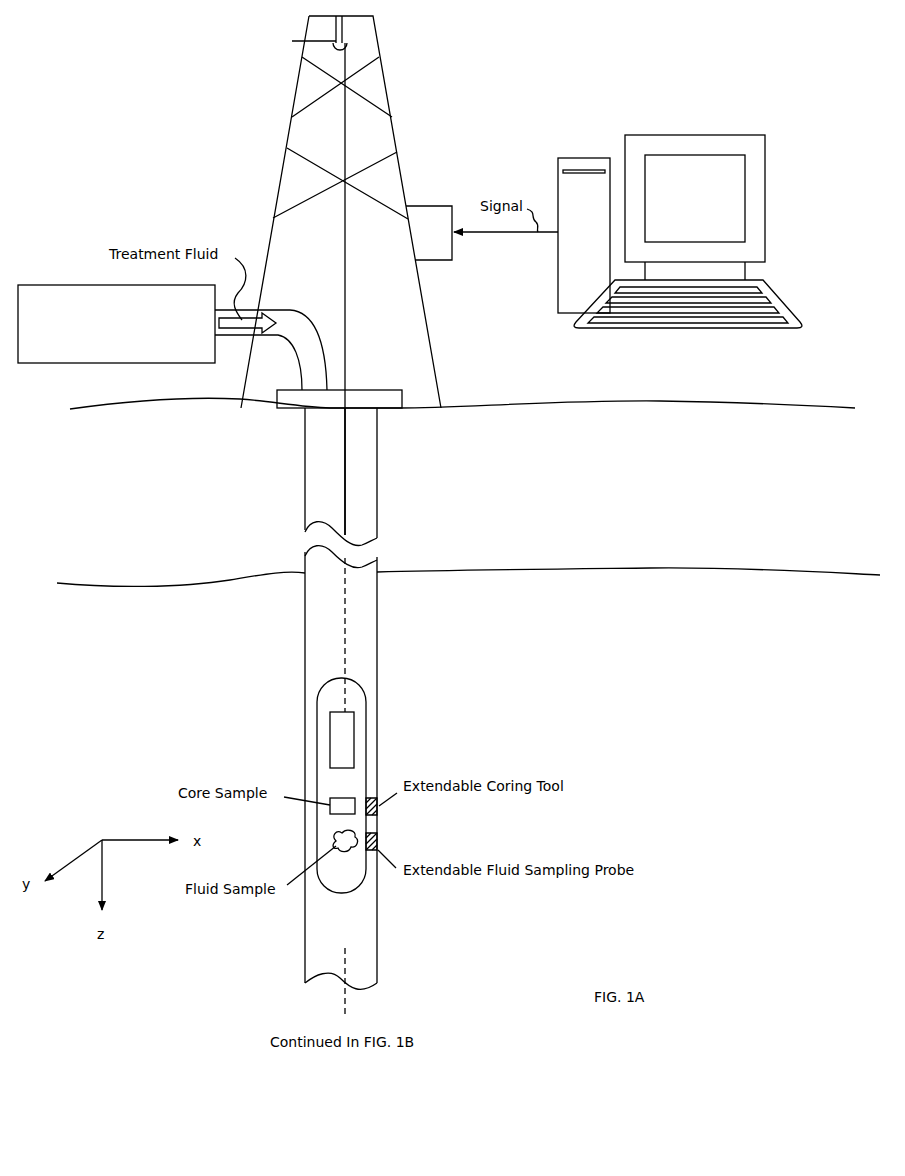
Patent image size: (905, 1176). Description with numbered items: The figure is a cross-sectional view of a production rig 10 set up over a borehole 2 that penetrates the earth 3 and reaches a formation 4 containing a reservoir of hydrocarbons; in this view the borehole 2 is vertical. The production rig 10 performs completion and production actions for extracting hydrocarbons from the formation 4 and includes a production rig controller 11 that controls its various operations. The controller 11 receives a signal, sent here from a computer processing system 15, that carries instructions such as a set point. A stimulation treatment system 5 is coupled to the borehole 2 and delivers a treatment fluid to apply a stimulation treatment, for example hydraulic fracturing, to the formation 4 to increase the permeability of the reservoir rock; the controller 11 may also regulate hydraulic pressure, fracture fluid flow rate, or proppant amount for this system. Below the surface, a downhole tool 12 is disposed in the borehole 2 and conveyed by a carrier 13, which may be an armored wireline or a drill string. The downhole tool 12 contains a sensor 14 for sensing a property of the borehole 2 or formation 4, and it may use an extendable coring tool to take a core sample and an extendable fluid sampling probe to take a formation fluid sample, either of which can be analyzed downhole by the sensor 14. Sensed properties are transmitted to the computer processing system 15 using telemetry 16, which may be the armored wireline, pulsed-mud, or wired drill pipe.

The production rig 10 is at (198, 112).
The production rig controller 11 is at (420, 206).
The computer processing system 15 is at (580, 158).
The stimulation treatment system 5 is at (116, 324).
The earth 3 is at (181, 446).
The borehole 2 is at (313, 500).
The carrier 13 is at (348, 493).
The formation 4 is at (177, 636).
The telemetry 16 is at (348, 640).
The downhole tool 12 is at (317, 702).
The sensor 14 is at (355, 738).